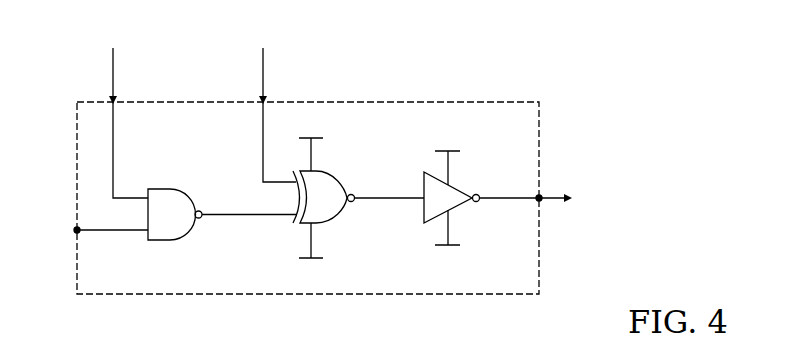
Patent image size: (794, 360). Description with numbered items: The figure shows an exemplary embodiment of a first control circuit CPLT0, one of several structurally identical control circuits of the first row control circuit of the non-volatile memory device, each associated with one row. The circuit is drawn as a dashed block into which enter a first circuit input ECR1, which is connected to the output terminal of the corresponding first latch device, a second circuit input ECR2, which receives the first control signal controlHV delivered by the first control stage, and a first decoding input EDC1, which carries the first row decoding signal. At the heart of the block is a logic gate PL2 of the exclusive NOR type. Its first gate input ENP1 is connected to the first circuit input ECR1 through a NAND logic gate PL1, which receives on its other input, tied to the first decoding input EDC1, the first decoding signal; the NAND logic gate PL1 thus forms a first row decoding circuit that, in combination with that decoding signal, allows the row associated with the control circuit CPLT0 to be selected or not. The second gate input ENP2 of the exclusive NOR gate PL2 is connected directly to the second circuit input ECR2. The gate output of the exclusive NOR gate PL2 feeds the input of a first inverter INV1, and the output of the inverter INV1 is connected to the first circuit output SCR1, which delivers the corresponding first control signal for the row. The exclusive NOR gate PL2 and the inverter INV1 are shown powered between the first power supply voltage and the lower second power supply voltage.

The first control circuit CPLT0 is at (457, 97).
The first decoding input EDC1 is at (110, 100).
The second circuit input ECR2 is at (260, 100).
The first circuit input ECR1 is at (76, 229).
The NAND logic gate PL1 is at (178, 218).
The first gate input ENP1 is at (297, 217).
The second gate input ENP2 is at (292, 184).
The exclusive NOR logic gate PL2 is at (328, 205).
The first inverter INV1 is at (455, 205).
The first circuit output SCR1 is at (541, 196).